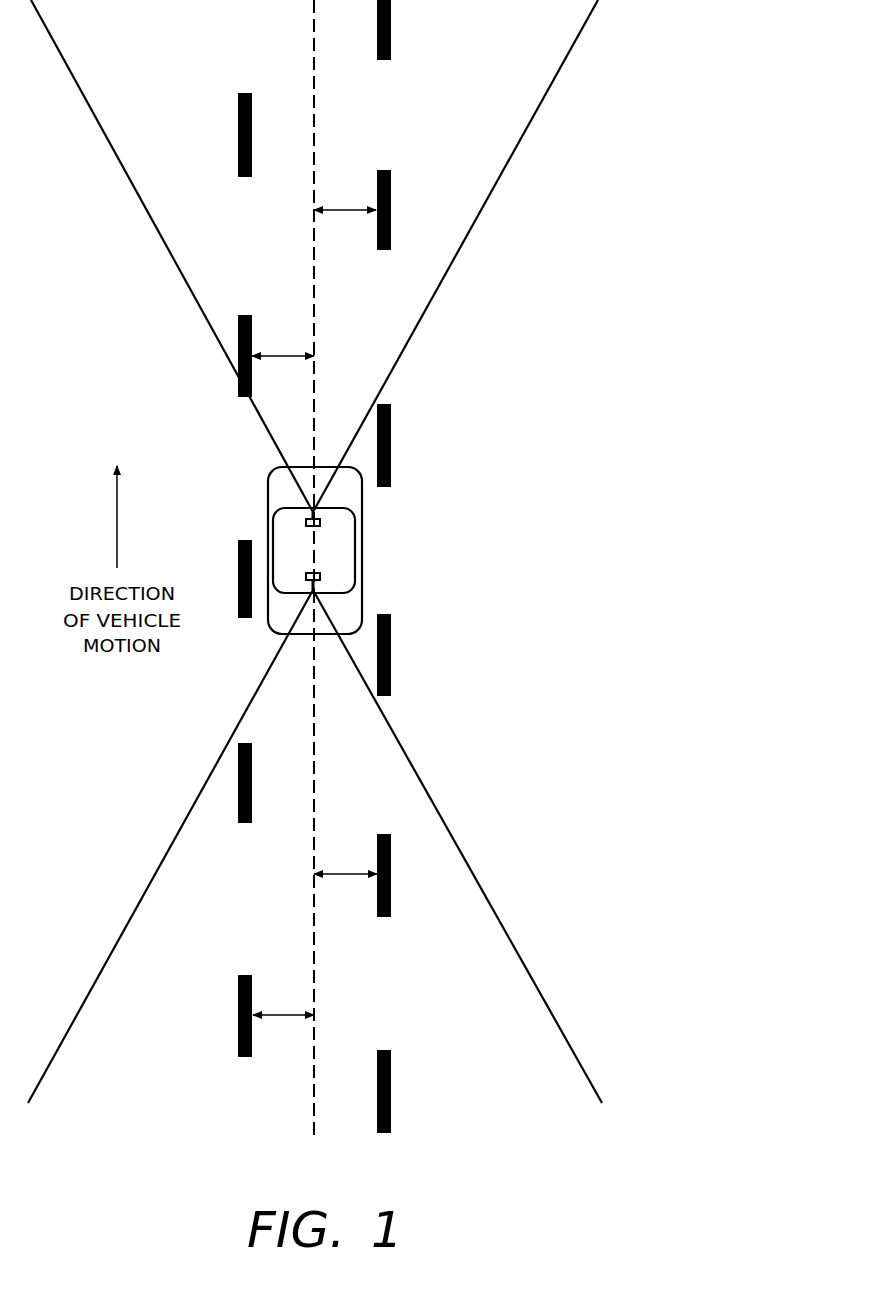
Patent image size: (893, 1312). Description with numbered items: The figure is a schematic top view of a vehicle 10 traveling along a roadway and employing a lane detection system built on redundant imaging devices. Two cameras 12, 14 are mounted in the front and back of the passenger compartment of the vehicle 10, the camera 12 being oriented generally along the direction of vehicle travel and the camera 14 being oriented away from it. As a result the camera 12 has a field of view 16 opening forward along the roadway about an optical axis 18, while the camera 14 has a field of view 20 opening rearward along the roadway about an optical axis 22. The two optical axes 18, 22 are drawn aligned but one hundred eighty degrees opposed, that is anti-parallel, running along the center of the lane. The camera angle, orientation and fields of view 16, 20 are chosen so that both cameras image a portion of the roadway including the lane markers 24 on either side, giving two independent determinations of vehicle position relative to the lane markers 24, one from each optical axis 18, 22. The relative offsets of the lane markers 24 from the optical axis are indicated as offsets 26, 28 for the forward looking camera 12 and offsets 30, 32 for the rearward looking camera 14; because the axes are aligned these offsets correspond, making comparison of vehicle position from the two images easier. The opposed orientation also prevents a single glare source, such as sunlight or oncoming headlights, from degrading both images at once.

The vehicle 10 is at (268, 500).
The camera 12 is at (320, 525).
The camera 14 is at (320, 577).
The field of view 16 is at (427, 318).
The optical axis 18 is at (314, 122).
The field of view 20 is at (412, 762).
The optical axis 22 is at (314, 809).
The lane markers 24 is at (238, 135).
The offset 26 is at (280, 356).
The offset 28 is at (340, 210).
The offset 30 is at (285, 1015).
The offset 32 is at (343, 876).